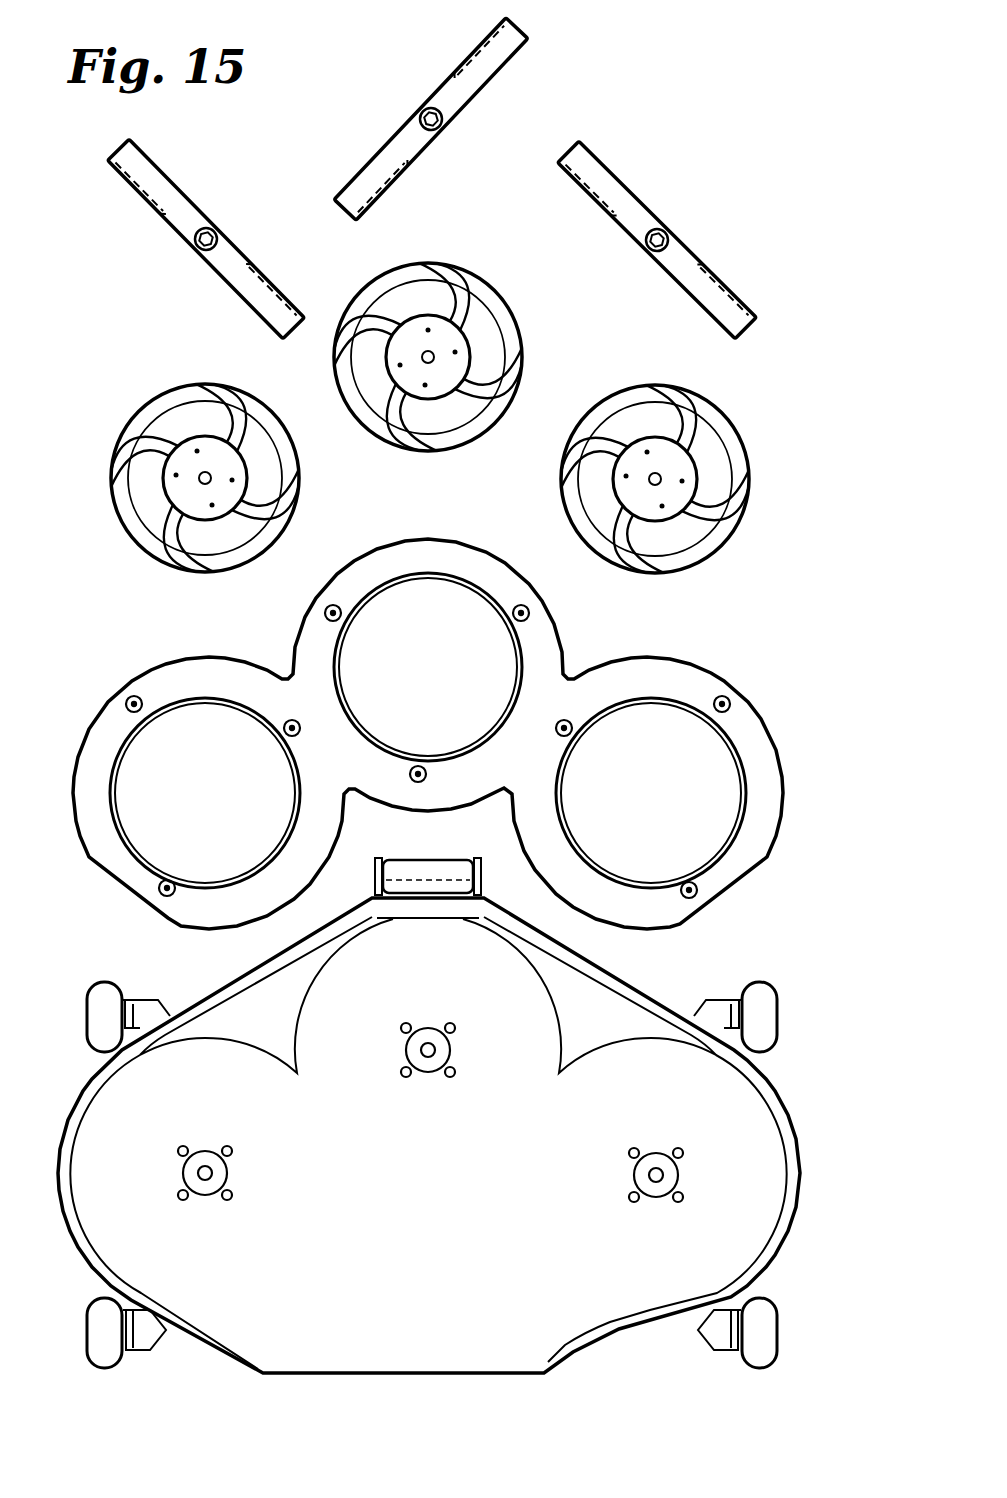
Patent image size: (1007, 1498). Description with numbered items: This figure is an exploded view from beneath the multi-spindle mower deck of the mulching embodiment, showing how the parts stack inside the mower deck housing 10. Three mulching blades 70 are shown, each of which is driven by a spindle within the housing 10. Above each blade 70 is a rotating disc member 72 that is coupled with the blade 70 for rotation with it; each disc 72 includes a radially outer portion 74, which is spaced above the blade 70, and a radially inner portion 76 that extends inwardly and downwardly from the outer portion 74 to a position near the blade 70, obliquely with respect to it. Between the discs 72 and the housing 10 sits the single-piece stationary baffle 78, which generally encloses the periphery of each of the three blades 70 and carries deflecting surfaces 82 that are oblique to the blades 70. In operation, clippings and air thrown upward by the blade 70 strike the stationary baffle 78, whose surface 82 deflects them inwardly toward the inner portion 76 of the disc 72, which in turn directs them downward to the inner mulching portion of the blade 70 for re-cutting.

The mower deck housing 10 is at (794, 1092).
The blade 70 is at (190, 192).
The disc member 72 is at (414, 418).
The radially outer portion 74 is at (503, 397).
The radially inner portion 76 is at (472, 328).
The stationary baffle 78 is at (455, 734).
The surface 82 is at (771, 775).